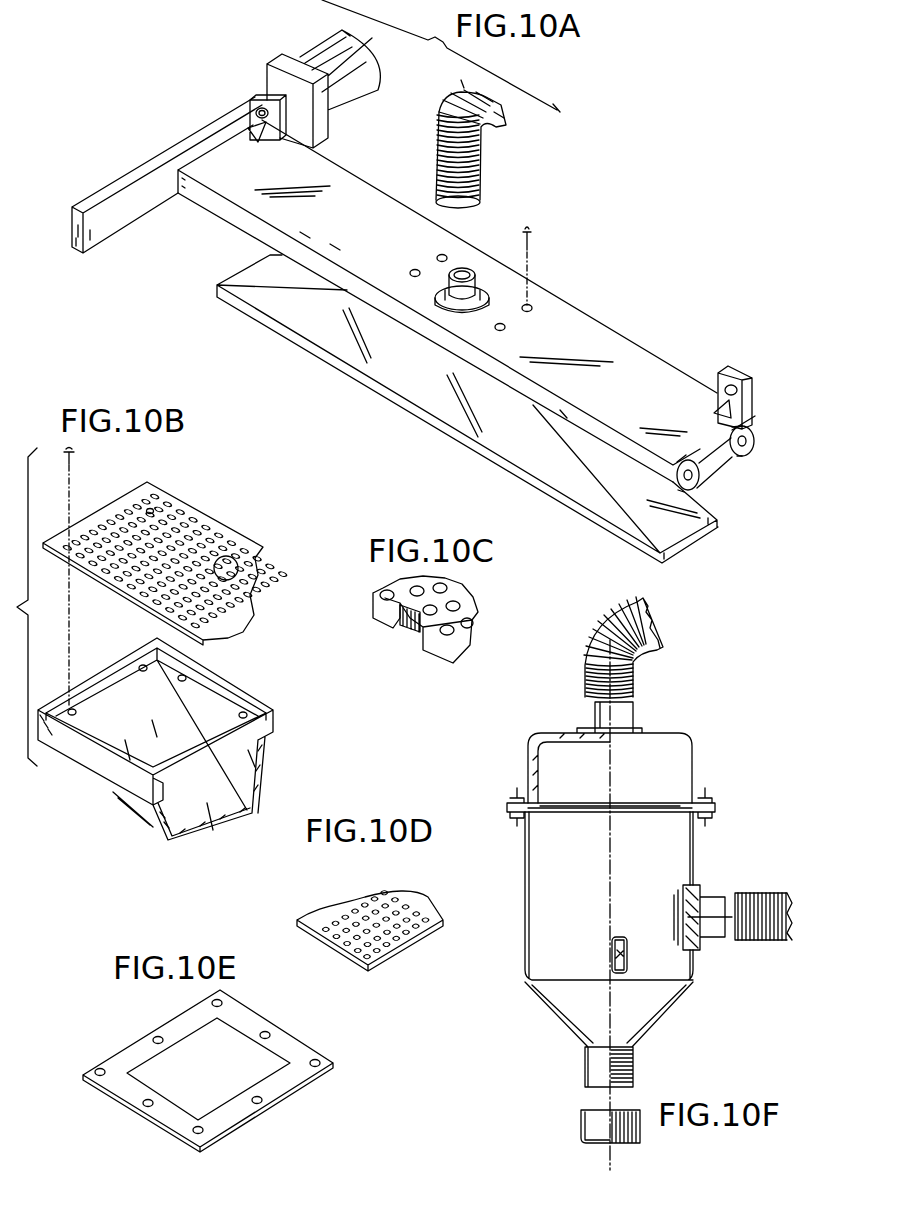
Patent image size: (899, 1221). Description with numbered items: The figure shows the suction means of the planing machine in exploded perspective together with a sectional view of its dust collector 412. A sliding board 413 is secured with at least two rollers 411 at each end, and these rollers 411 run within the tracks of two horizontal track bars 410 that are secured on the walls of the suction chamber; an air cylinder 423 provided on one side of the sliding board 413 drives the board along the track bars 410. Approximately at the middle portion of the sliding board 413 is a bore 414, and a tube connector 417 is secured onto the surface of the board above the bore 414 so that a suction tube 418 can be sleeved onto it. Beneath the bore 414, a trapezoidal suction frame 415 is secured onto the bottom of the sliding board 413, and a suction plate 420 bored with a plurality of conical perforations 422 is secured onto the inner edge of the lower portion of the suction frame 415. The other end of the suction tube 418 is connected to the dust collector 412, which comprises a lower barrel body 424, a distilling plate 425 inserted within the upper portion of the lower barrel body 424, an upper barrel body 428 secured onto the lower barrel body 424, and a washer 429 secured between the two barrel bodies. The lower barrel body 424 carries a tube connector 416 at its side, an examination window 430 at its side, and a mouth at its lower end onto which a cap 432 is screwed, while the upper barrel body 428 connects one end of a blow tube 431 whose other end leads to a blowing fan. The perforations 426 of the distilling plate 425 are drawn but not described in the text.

In FIG. 10A, the horizontal track bar 410 is at (103, 218).
In FIG. 10A, the roller 411 is at (700, 472).
In FIG. 10F, the dust collector 412 is at (548, 1013).
In FIG. 10A, the sliding board 413 is at (552, 332).
In FIG. 10A, the bore 414 is at (470, 312).
In FIG. 10A, the trapezoidal suction frame 415 is at (417, 393).
In FIG. 10F, the tube connector 416 is at (720, 937).
In FIG. 10A, the tube connector 417 is at (463, 267).
In FIG. 10A, the suction tube 418 is at (483, 132).
In FIG. 10F, the suction tube 418 is at (757, 892).
In FIG. 10B, the suction plate 420 is at (185, 515).
In FIG. 10B, the conical perforation 422 is at (152, 507).
In FIG. 10C, the conical perforation 422 is at (410, 640).
In FIG. 10A, the air cylinder 423 is at (345, 68).
In FIG. 10F, the lower barrel body 424 is at (667, 867).
In FIG. 10D, the distilling plate 425 is at (380, 945).
In FIG. 10D, the perforations 426 is at (378, 897).
In FIG. 10F, the upper barrel body 428 is at (647, 750).
In FIG. 10E, the washer 429 is at (287, 1083).
In FIG. 10F, the washer 429 is at (640, 803).
In FIG. 10F, the examination window 430 is at (617, 950).
In FIG. 10F, the blow tube 431 is at (637, 630).
In FIG. 10F, the cap 432 is at (607, 1145).